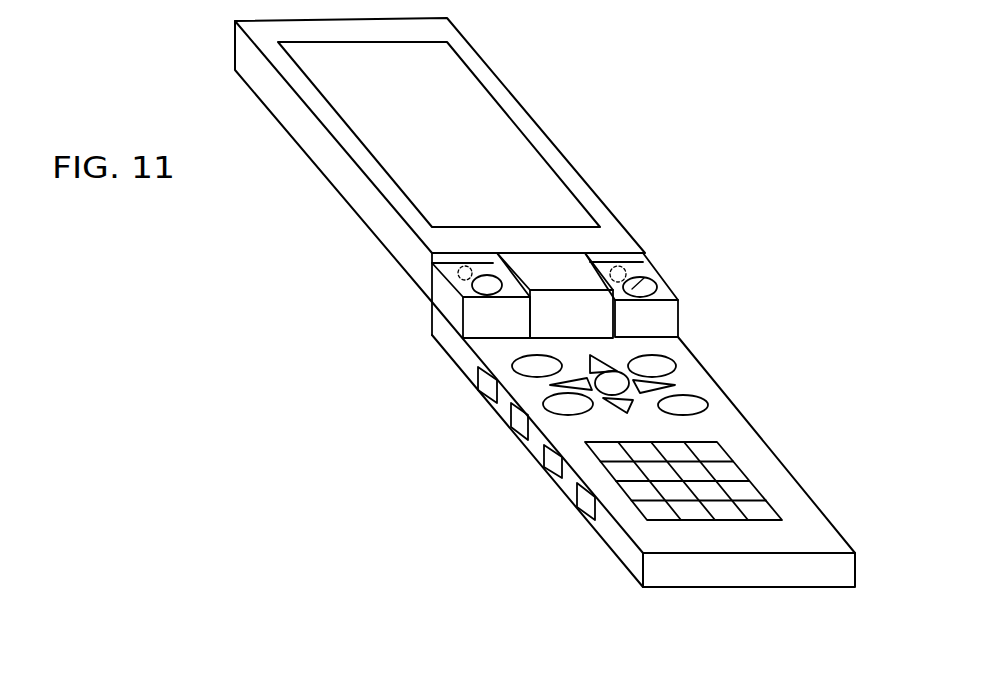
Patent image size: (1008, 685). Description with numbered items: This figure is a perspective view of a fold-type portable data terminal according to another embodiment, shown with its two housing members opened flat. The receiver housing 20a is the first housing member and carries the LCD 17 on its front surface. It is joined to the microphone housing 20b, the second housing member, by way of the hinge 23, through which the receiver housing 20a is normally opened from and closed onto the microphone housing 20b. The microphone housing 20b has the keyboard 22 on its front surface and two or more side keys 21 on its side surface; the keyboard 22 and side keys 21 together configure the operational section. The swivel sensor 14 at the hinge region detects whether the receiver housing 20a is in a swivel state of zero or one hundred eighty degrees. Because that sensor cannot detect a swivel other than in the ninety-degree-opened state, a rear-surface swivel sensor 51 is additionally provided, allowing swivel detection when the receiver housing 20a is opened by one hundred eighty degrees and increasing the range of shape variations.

The receiver housing 20a is at (430, 34).
The LCD 17 is at (492, 126).
The rear-surface swivel sensor 51 is at (458, 268).
The swivel sensor 14 is at (480, 285).
The hinge 23 is at (438, 287).
The side keys 21 is at (513, 420).
The microphone housing 20b is at (758, 452).
The keyboard 22 is at (745, 492).